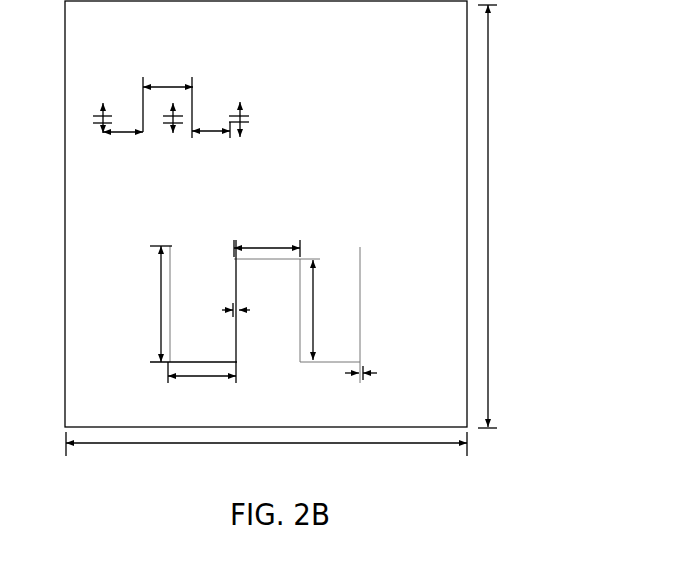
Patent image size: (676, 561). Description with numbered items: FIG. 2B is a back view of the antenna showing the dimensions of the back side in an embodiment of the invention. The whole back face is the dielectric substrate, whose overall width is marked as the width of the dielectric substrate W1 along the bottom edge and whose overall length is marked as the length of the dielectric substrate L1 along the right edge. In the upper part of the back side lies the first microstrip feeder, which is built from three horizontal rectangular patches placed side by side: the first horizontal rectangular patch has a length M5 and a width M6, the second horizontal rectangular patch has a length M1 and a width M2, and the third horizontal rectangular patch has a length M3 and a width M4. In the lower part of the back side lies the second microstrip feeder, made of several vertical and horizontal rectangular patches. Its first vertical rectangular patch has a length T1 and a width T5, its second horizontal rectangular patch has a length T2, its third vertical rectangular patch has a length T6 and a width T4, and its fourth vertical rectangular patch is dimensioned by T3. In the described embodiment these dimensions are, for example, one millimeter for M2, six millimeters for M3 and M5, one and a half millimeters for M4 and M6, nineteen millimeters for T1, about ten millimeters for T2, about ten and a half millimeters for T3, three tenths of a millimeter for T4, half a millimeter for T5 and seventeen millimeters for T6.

The length of the second horizontal rectangular patch in the first microstrip feeder M1 is at (168, 94).
The width of the second horizontal rectangular patch in the first microstrip feeder M2 is at (168, 139).
The length of the third horizontal rectangular patch in the first microstrip feeder M3 is at (211, 149).
The width of the third horizontal rectangular patch in the first microstrip feeder M4 is at (262, 119).
The length of the first horizontal rectangular patch in the first microstrip feeder M5 is at (123, 154).
The width of the first horizontal rectangular patch in the first microstrip feeder M6 is at (97, 102).
The length of the first vertical rectangular patch in the second microstrip feeder T1 is at (175, 304).
The length of the second horizontal rectangular patch in the second microstrip feede T2 is at (202, 354).
The fourth vertical rectangular patch in the second microstrip feeder T3 is at (267, 234).
The width of the third vertical rectangular patch in the second microstrip feeder T4 is at (252, 313).
The width of the first vertical rectangular patch in the second microstrip feeder T5 is at (370, 356).
The length of the third vertical rectangular patch in the second microstrip feeder T6 is at (330, 310).
The length of the dielectric substrate L1 is at (500, 216).
The width of the dielectric substrate W1 is at (266, 456).